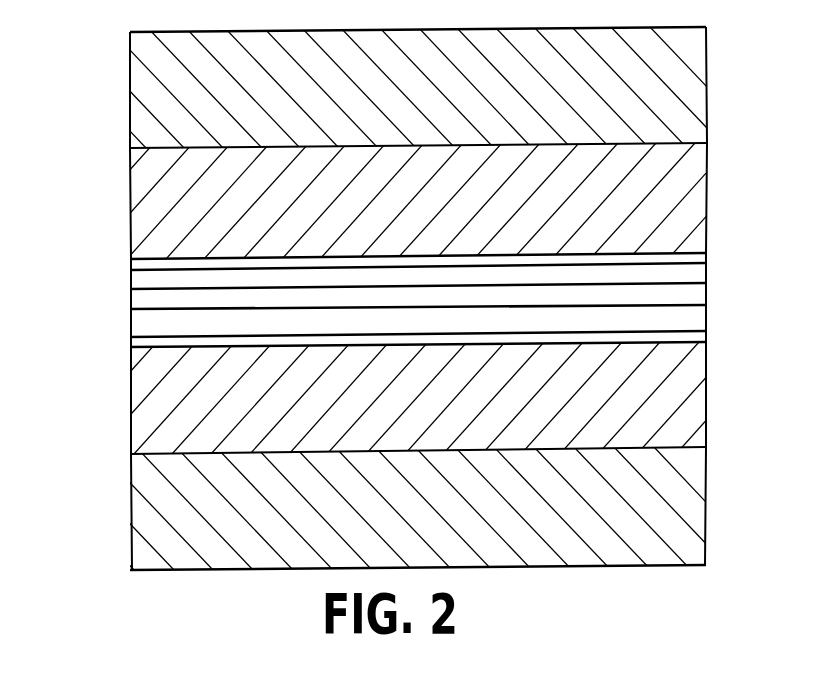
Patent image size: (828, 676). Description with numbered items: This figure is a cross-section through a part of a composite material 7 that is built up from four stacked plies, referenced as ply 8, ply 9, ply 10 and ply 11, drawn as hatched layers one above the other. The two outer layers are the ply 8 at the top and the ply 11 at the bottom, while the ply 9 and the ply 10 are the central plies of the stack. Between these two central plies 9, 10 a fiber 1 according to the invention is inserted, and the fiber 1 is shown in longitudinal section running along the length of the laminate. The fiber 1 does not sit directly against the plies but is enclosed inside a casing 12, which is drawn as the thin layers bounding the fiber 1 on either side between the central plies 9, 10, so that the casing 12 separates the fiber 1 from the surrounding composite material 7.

The composite material 7 is at (109, 570).
The ply 8 is at (146, 123).
The central ply 9 is at (146, 219).
The fiber 1 is at (156, 300).
The central ply 10 is at (156, 412).
The ply 11 is at (152, 520).
The casing 12 is at (698, 258).